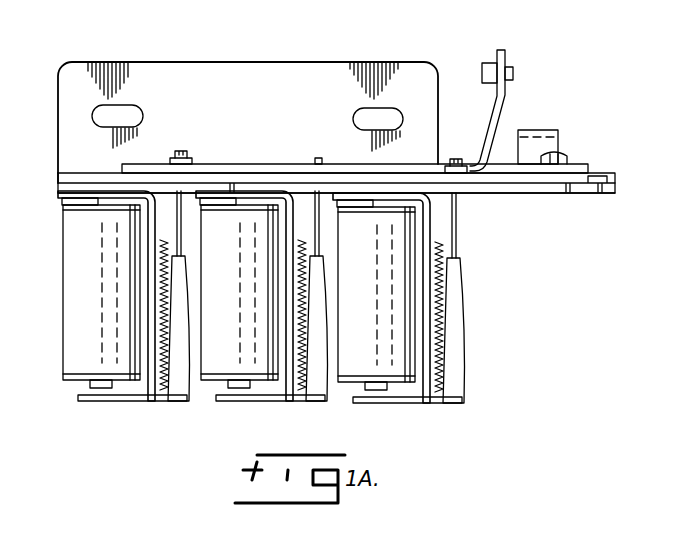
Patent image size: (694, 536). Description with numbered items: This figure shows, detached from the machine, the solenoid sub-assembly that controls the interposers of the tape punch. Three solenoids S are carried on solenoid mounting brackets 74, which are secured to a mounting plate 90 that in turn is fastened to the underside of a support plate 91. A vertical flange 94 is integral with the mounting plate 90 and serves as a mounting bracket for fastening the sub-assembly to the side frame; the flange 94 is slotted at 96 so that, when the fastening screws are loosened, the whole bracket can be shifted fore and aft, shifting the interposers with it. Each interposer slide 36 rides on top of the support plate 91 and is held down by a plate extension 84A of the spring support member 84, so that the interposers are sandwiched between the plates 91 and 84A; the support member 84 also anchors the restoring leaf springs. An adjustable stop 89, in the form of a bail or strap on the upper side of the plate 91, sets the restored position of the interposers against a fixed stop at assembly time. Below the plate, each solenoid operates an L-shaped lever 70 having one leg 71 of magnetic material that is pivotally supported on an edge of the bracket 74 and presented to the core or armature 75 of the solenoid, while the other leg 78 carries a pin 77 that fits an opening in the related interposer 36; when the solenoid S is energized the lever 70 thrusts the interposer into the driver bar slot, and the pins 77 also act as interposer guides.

The vertical flange 94 is at (351, 63).
The slot 96 is at (145, 110).
The mounting plate 90 is at (56, 190).
The plate extension 84A is at (283, 165).
The interposer slide 36 is at (588, 181).
The support plate 91 is at (607, 195).
The support post 84 is at (498, 52).
The adjustable stop 89 is at (532, 129).
The solenoid mounting bracket 74 is at (432, 240).
The solenoid S is at (352, 368).
The leg 71 is at (363, 394).
The core or armature 75 is at (375, 401).
The pin 77 is at (457, 252).
The lever 70 is at (478, 322).
The leg 78 is at (466, 365).